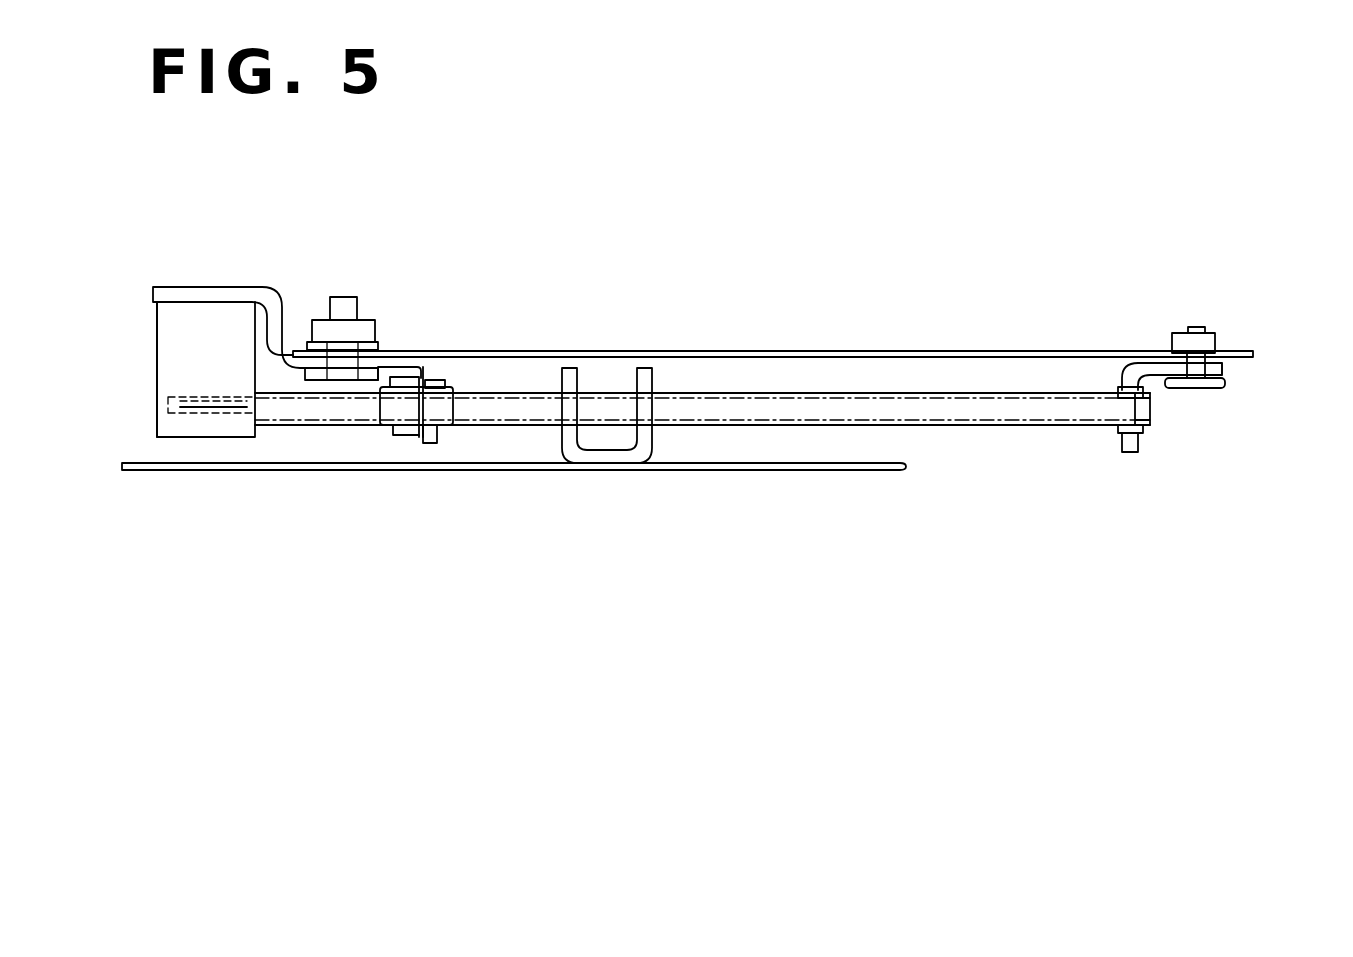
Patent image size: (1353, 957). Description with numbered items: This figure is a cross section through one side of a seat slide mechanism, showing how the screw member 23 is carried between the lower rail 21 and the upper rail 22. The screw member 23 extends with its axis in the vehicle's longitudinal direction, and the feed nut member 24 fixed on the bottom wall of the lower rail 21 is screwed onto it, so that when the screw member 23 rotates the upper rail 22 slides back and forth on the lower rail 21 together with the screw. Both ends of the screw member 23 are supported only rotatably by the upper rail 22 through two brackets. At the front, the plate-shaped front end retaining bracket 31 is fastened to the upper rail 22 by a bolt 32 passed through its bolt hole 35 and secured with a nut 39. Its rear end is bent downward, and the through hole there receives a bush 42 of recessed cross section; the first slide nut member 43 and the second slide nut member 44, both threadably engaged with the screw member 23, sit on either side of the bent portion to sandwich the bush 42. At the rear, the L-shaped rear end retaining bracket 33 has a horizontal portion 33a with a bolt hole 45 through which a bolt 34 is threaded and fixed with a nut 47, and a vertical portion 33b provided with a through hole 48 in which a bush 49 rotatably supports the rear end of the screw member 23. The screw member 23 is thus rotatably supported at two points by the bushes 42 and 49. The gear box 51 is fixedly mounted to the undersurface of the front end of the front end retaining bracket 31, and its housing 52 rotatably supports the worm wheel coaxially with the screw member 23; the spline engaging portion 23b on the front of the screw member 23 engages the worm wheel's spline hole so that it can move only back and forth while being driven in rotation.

The lower rail 21 is at (727, 472).
The upper rail 22 is at (757, 349).
The screw member 23 is at (823, 393).
The spline engaging portion 23b is at (217, 410).
The feed nut member 24 is at (607, 383).
The front end retaining bracket 31 is at (270, 286).
The bolt 32 is at (343, 380).
The rear end retaining bracket 33 is at (1124, 371).
The horizontal portion 33a is at (1222, 368).
The vertical portion 33b is at (1127, 453).
The bolt 34 is at (1202, 388).
The bolt hole 35 is at (347, 342).
The nut 39 is at (316, 323).
The bush 42 is at (432, 382).
The first slide nut member 43 is at (448, 429).
The second slide nut member 44 is at (398, 443).
The bolt hole 45 is at (1217, 345).
The nut 47 is at (1177, 334).
The through hole 48 is at (1150, 412).
The bush 49 is at (1117, 430).
The gear box 51 is at (155, 330).
The housing 52 is at (163, 363).